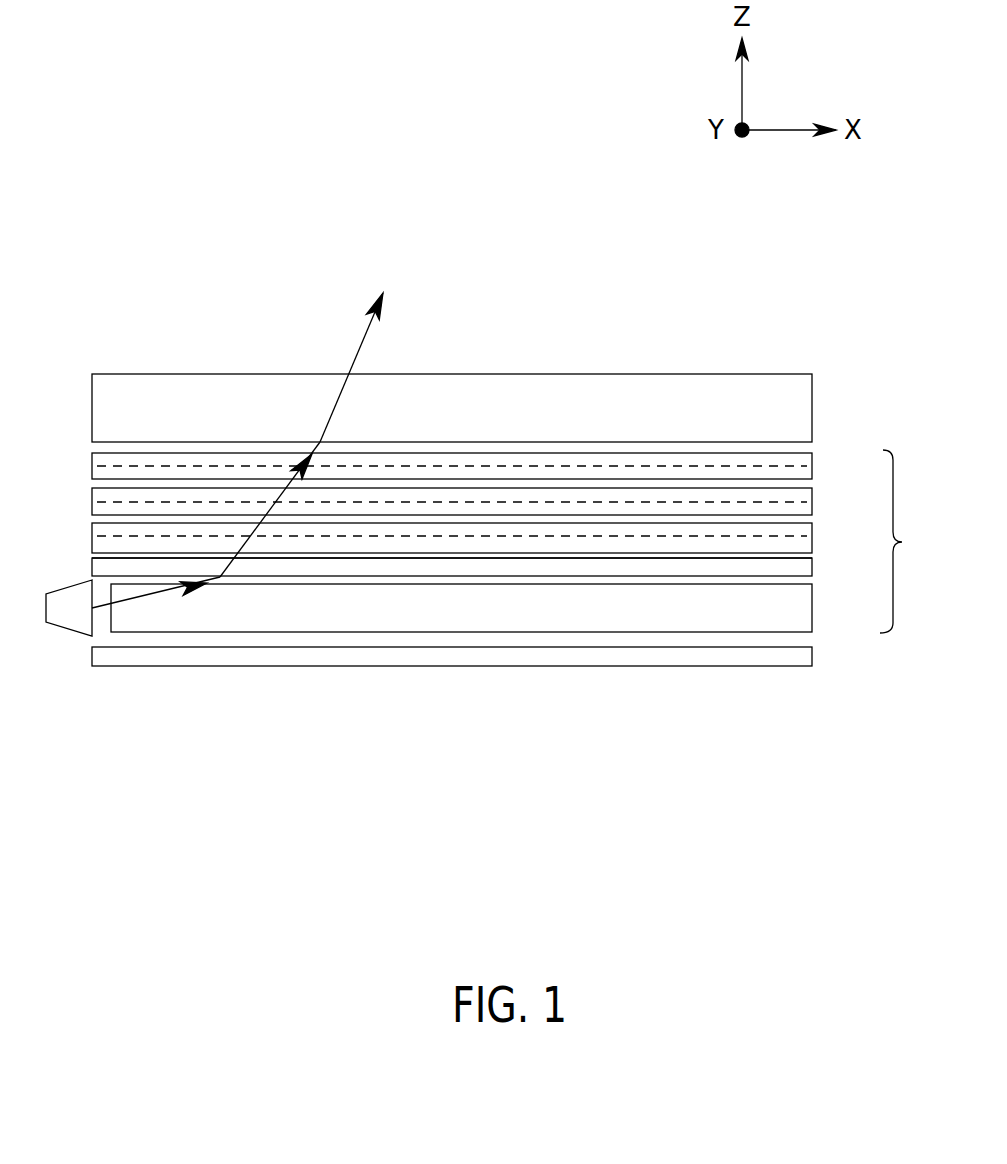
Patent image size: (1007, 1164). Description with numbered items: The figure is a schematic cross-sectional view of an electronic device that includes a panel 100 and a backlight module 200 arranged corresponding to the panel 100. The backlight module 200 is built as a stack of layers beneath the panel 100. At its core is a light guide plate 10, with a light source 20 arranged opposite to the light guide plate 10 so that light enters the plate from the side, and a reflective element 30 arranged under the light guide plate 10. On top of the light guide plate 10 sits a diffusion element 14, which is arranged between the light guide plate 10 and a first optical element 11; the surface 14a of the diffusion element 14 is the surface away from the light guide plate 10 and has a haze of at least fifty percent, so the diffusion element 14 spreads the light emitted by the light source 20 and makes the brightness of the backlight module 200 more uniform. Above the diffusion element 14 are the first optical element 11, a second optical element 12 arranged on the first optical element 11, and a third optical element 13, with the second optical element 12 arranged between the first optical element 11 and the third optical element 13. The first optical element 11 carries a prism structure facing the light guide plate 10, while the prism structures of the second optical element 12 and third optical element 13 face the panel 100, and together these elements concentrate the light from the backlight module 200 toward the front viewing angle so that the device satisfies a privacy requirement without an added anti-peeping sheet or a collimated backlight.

The panel 100 is at (812, 404).
The third optical element 13 is at (812, 464).
The second optical element 12 is at (812, 500).
The first optical element 11 is at (812, 539).
The diffusion element 14 is at (812, 570).
The surface of the diffusion element 14a is at (98, 557).
The light guide plate 10 is at (812, 609).
The reflective element 30 is at (812, 656).
The light source 20 is at (68, 621).
The backlight module 200 is at (913, 541).